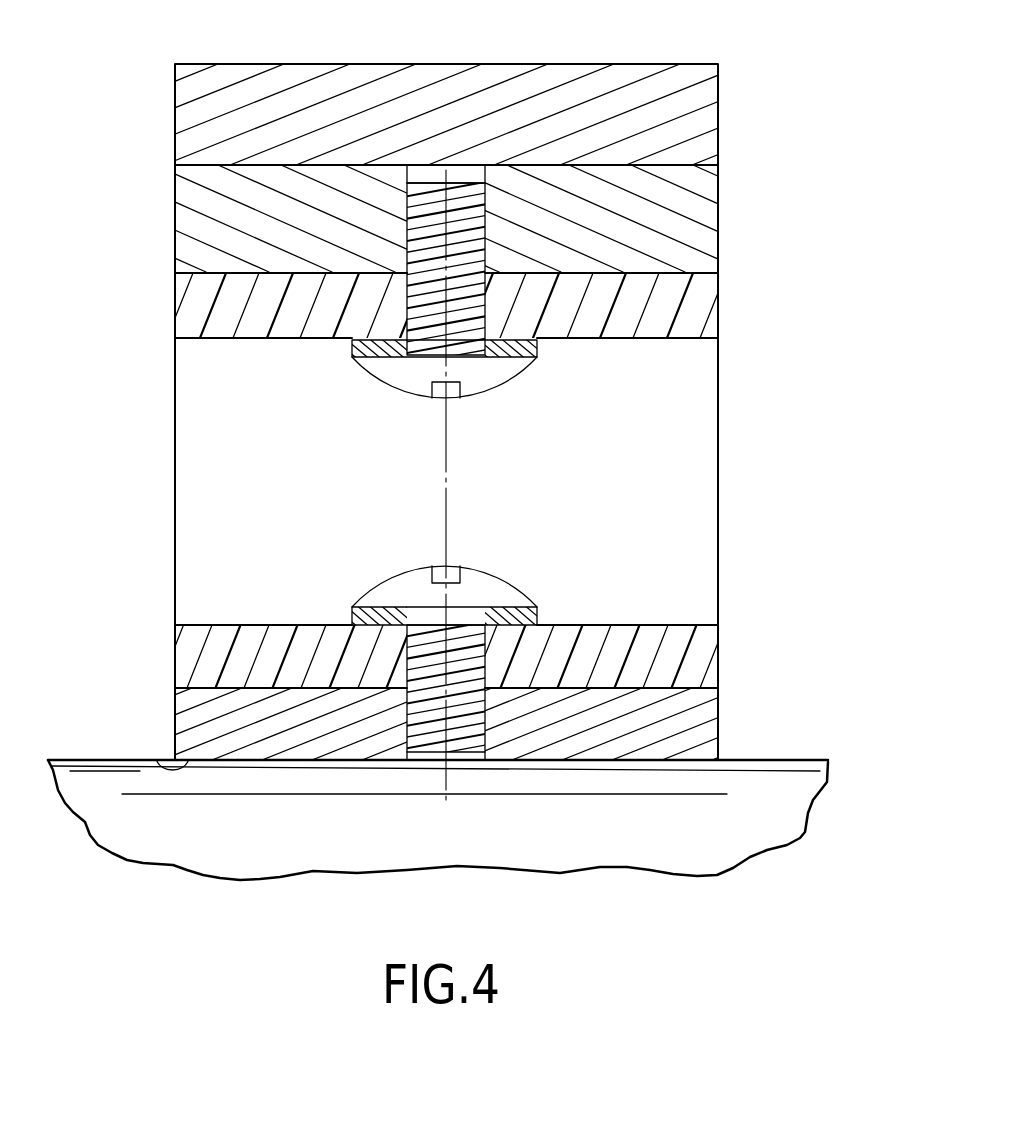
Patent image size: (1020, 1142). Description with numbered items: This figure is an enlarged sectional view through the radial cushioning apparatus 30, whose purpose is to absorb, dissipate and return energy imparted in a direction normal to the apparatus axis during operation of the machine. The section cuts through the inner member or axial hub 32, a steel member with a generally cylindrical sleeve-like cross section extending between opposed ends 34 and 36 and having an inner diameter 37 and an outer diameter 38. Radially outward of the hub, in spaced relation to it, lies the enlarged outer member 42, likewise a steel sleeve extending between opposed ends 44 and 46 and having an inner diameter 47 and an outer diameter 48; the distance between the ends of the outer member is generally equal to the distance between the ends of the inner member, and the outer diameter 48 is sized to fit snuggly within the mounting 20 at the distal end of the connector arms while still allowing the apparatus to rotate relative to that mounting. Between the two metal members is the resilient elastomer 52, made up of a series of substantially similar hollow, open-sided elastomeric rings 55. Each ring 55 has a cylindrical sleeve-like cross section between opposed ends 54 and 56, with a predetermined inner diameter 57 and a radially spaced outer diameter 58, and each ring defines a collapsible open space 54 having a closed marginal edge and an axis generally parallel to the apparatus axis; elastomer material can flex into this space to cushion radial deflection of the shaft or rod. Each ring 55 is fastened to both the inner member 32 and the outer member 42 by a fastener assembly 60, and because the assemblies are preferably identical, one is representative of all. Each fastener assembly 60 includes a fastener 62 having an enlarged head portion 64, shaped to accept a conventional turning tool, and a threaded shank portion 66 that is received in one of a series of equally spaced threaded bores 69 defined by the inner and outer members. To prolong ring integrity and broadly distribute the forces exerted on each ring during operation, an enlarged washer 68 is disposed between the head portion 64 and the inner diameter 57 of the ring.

The mounting 20 is at (153, 141).
The radial cushioning apparatus 30 is at (729, 209).
The inner member or axial hub 32 is at (710, 728).
The end of inner member 34 is at (720, 708).
The end of inner member 36 is at (175, 700).
The inner diameter of inner member 37 is at (160, 758).
The outer diameter of inner member 38 is at (690, 687).
The outer member 42 is at (617, 195).
The end of outer member 44 is at (733, 240).
The end of outer member 46 is at (176, 203).
The inner diameter of outer member 47 is at (652, 274).
The outer diameter of outer member 48 is at (215, 168).
The resilient elastomer 52 is at (156, 652).
The collapsible open space 54 is at (719, 445).
The hollow elastomeric ring 55 is at (675, 637).
The end of ring 56 is at (176, 462).
The inner diameter of ring 57 is at (678, 340).
The outer diameter of ring 58 is at (198, 272).
The fastener assembly 60 is at (438, 408).
The fastener 62 is at (490, 377).
The enlarged head portion 64 is at (390, 378).
The threaded shank portion 66 is at (470, 193).
The enlarged washer 68 is at (350, 345).
The threaded bore 69 is at (420, 188).